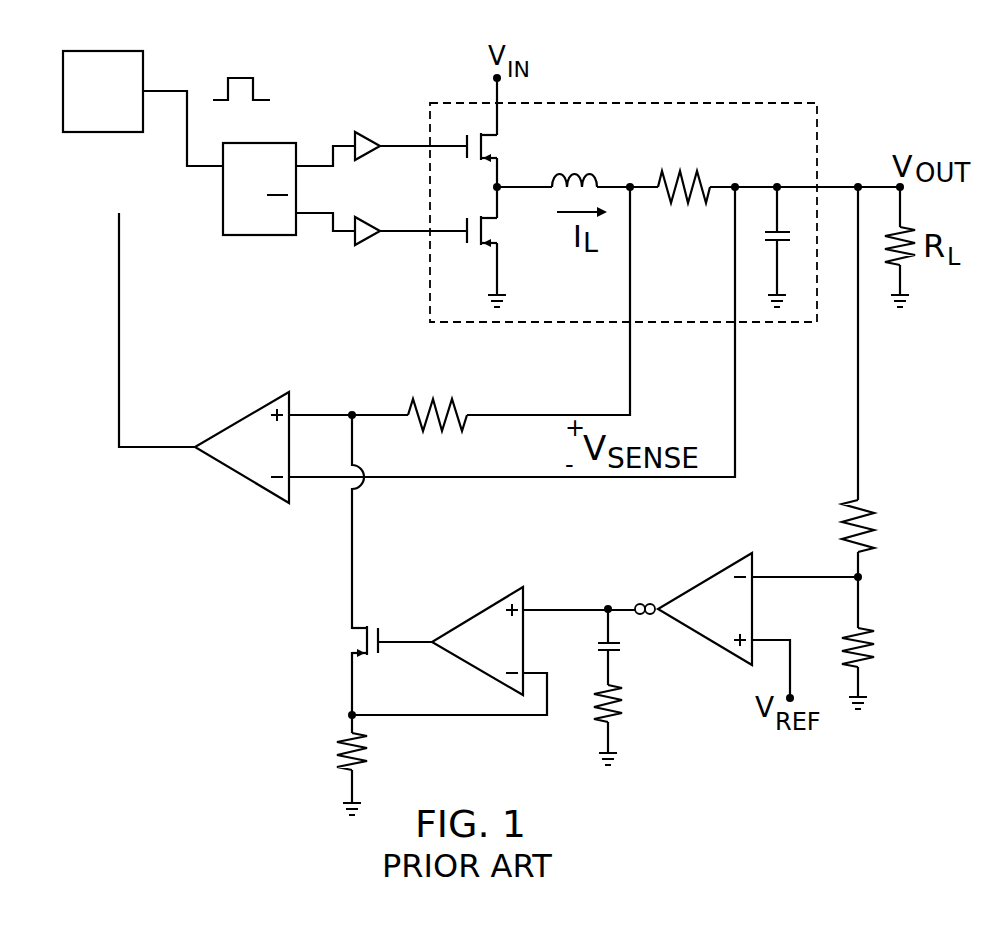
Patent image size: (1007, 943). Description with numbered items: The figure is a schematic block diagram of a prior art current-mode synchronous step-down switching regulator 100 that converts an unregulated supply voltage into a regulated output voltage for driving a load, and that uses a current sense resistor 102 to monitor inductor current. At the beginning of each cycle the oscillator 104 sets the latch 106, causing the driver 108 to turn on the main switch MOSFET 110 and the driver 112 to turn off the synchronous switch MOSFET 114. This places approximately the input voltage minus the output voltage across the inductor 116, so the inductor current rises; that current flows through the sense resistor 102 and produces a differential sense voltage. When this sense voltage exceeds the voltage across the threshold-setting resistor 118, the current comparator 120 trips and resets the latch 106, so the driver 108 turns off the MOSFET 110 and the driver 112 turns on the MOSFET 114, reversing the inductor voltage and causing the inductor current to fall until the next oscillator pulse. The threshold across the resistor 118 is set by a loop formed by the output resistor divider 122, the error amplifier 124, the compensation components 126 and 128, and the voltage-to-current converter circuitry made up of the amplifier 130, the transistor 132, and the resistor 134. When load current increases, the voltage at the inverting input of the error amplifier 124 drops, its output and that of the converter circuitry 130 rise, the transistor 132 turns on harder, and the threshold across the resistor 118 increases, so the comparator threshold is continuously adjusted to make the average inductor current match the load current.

The current-mode synchronous step-down switching regulator 100 is at (903, 84).
The current sense resistor 102 is at (698, 175).
The oscillator 104 is at (107, 132).
The latch 106 is at (258, 235).
The driver 108 is at (365, 132).
The main switch MOSFET 110 is at (486, 147).
The driver 112 is at (400, 203).
The synchronous switch MOSFET 114 is at (486, 232).
The inductor 116 is at (598, 176).
The threshold-setting resistor 118 is at (480, 380).
The current comparator 120 is at (235, 422).
The output resistor divider 122 is at (870, 538).
The error amplifier 124 is at (703, 578).
The compensation component 126 is at (620, 650).
The compensation component 128 is at (593, 718).
The voltage-to-current converter circuitry 130 is at (477, 612).
The transistor 132 is at (365, 640).
The resistor 134 is at (340, 767).